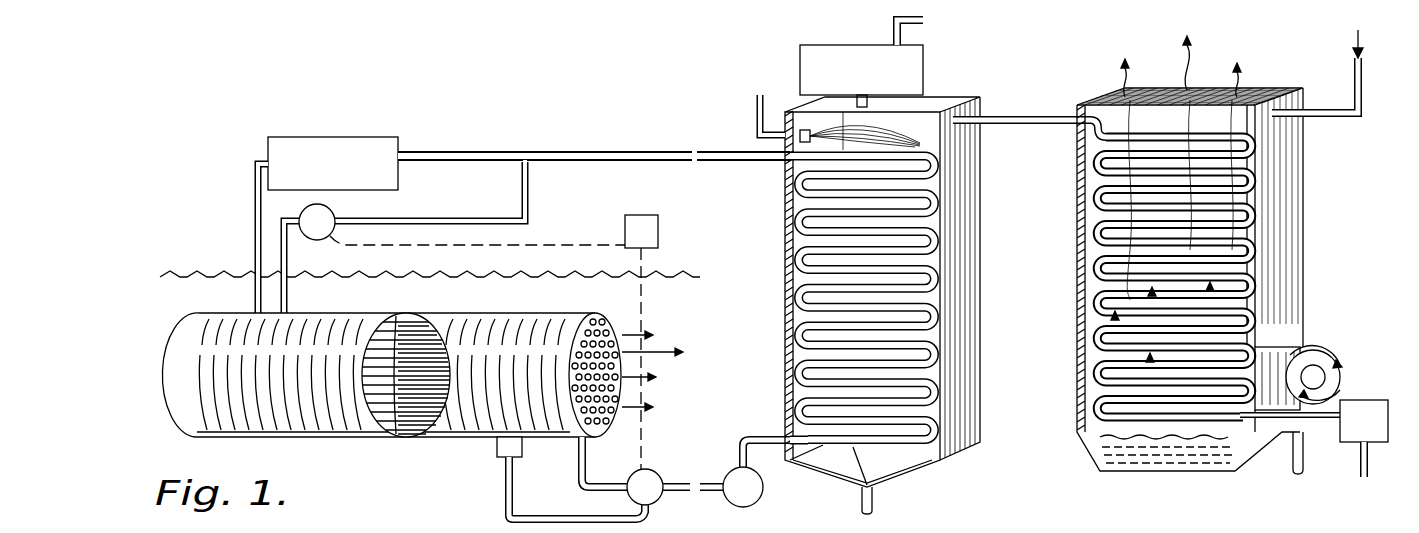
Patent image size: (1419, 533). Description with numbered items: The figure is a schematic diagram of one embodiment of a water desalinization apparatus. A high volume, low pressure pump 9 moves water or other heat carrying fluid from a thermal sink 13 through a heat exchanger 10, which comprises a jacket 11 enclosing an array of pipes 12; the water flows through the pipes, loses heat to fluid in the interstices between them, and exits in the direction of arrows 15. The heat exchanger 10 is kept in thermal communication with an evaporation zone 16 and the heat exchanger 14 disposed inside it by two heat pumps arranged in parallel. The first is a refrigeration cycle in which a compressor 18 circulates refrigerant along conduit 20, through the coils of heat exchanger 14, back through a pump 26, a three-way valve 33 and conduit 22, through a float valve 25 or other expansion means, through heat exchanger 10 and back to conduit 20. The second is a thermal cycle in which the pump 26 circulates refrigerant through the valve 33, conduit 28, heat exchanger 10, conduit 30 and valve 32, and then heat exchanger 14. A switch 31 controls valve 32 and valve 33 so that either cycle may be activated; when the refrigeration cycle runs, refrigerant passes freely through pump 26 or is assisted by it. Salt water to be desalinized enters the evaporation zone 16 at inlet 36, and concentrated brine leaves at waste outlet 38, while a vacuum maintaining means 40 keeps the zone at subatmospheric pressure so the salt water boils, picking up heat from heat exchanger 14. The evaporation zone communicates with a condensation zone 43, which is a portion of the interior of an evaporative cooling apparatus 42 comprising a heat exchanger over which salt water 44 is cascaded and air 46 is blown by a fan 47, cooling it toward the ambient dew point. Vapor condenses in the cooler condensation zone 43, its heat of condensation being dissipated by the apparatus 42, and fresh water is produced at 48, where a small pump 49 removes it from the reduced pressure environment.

The pump 9 is at (183, 398).
The heat exchanger 10 is at (391, 380).
The jacket 11 is at (290, 397).
The array of pipes 12 is at (355, 335).
The thermal sink 13 is at (461, 305).
The heat exchanger 14 is at (800, 293).
The arrows 15 is at (637, 374).
The evaporation zone 16 is at (782, 243).
The compressor 18 is at (375, 137).
The conduit 20 is at (617, 152).
The conduit 22 is at (507, 515).
The float valve 25 is at (500, 443).
The pump 26 is at (730, 480).
The conduit 28 is at (612, 488).
The conduit 30 is at (427, 218).
The switch 31 is at (646, 215).
The valve 32 is at (328, 214).
The three-way valve 33 is at (647, 472).
The inlet 36 is at (755, 125).
The waste outlet 38 is at (870, 497).
The vacuum maintaining means 40 is at (873, 80).
The evaporative cooling apparatus 42 is at (1277, 192).
The condensation zone 43 is at (1090, 298).
The salt water 44 is at (1257, 127).
The air 46 is at (1100, 300).
The fan 47 is at (1325, 350).
The fresh water outlet 48 is at (1368, 467).
The pump 49 is at (1375, 432).